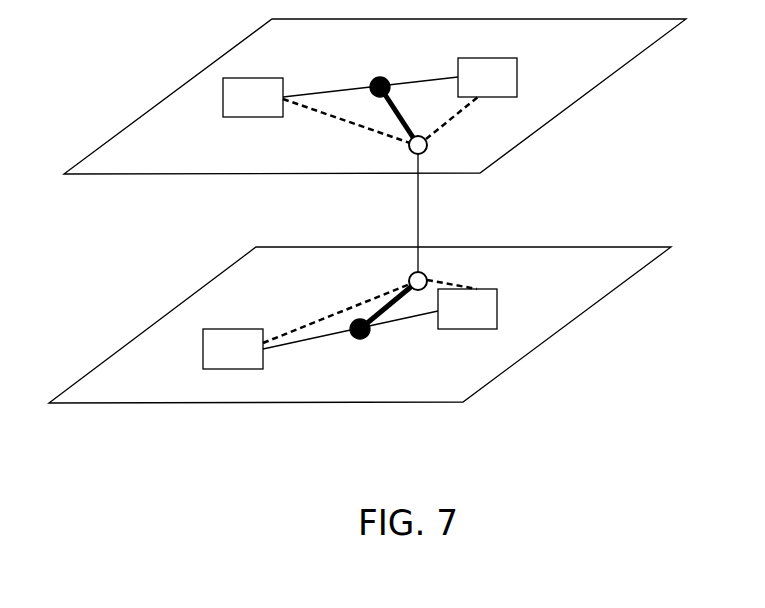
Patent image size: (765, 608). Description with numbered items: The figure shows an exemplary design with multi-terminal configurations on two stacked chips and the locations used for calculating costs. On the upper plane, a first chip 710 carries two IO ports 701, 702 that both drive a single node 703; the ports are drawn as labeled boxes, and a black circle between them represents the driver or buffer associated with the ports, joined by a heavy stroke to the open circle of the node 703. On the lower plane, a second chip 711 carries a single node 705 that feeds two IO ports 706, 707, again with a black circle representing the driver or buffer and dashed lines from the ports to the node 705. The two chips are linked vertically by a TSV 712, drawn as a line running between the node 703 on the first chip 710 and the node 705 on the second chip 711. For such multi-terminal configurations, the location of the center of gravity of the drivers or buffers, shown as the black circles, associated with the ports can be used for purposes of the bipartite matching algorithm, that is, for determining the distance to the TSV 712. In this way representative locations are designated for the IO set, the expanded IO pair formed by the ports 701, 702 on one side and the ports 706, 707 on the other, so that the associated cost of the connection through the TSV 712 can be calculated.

The IO port 701 is at (253, 97).
The IO port 702 is at (487, 77).
The single node 703 is at (446, 149).
The single node 705 is at (394, 274).
The IO port 706 is at (233, 349).
The IO port 707 is at (467, 309).
The first chip 710 is at (322, 52).
The second chip 711 is at (465, 382).
The TSV 712 is at (477, 226).